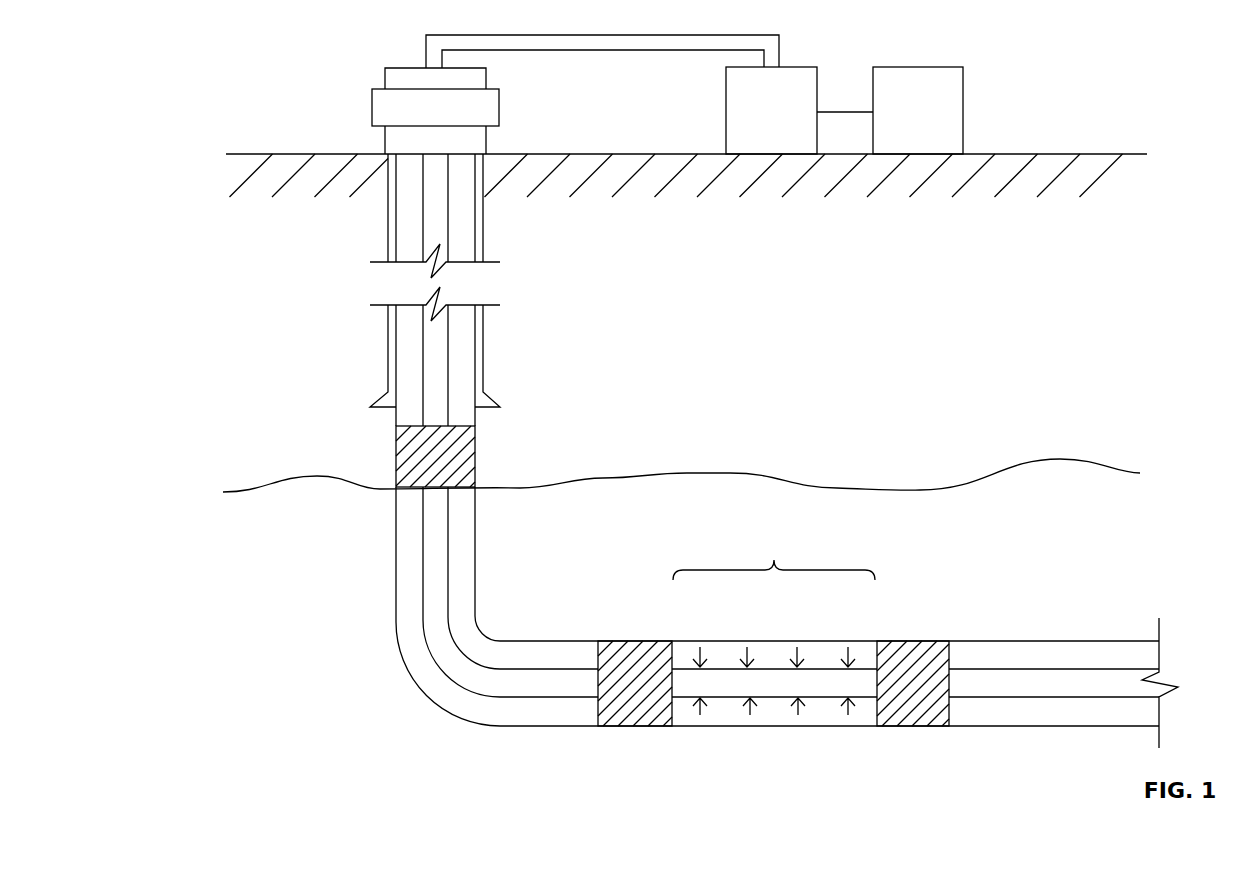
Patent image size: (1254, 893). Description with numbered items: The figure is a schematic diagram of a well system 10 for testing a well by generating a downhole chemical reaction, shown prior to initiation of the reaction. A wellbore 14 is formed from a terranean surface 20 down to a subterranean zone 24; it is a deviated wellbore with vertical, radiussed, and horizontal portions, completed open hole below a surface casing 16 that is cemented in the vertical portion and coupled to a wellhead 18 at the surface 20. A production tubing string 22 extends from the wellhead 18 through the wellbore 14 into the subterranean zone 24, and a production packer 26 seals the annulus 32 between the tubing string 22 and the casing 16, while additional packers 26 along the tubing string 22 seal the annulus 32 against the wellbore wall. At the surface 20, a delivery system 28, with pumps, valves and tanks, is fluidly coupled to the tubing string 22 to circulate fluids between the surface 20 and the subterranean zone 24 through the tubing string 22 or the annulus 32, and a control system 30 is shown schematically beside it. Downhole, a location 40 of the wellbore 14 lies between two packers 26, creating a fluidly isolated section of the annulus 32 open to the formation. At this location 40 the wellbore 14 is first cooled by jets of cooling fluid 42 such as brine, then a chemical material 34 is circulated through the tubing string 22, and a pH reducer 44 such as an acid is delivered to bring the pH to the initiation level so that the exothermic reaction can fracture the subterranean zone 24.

The well system 10 is at (1066, 72).
The wellbore 14 is at (475, 527).
The casing 16 is at (388, 363).
The wellhead 18 is at (390, 110).
The terranean surface 20 is at (623, 153).
The production tubing string 22 is at (468, 687).
The subterranean zone 24 is at (962, 524).
The production packer 26 is at (396, 443).
The delivery system 28 is at (649, 94).
The control system 30 is at (918, 110).
The annulus 32 is at (465, 585).
The chemical material 34 is at (747, 647).
The location 40 is at (774, 556).
The cooling fluid 42 is at (700, 647).
The pH reducer 44 is at (848, 647).